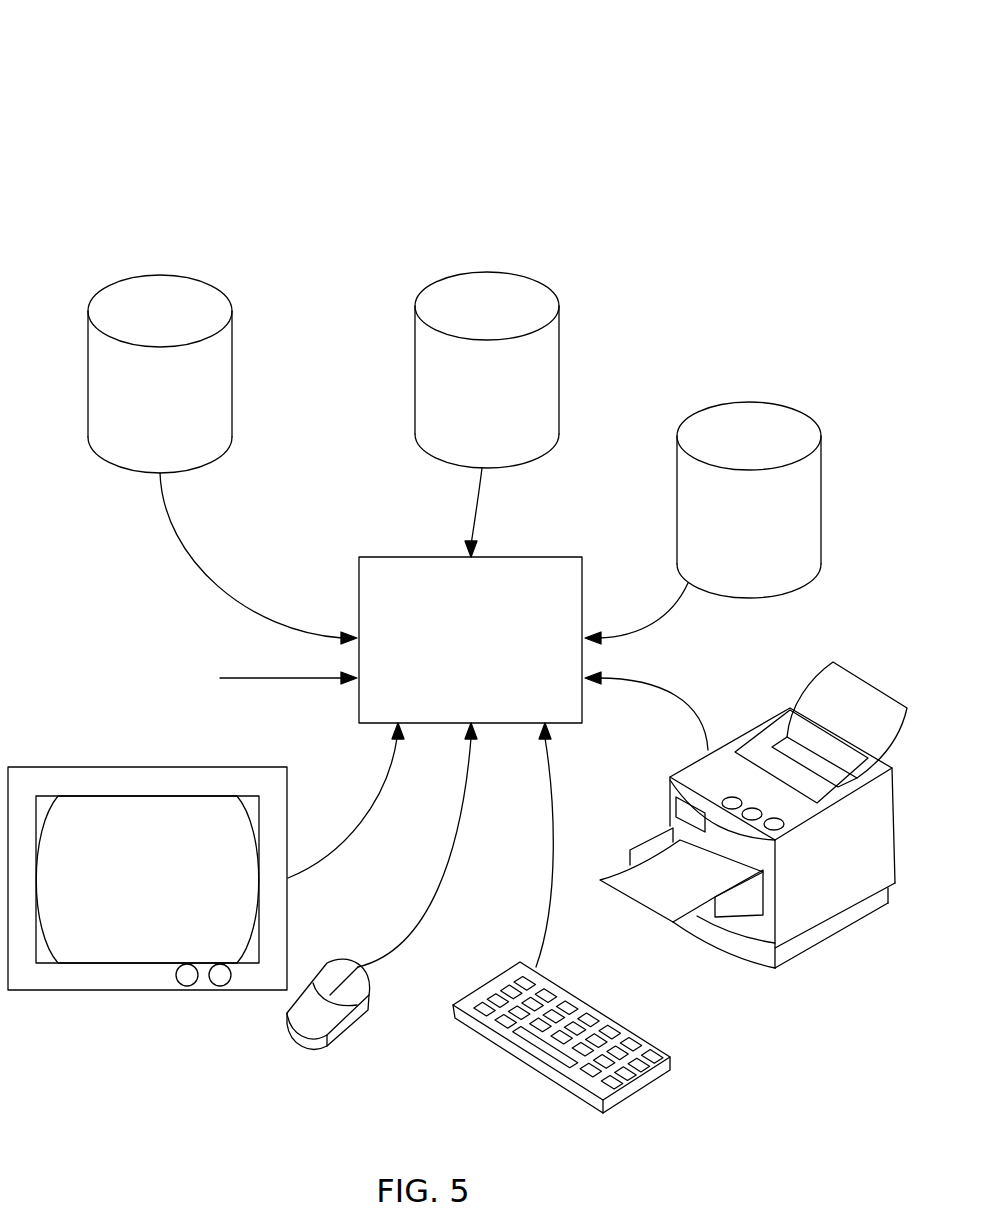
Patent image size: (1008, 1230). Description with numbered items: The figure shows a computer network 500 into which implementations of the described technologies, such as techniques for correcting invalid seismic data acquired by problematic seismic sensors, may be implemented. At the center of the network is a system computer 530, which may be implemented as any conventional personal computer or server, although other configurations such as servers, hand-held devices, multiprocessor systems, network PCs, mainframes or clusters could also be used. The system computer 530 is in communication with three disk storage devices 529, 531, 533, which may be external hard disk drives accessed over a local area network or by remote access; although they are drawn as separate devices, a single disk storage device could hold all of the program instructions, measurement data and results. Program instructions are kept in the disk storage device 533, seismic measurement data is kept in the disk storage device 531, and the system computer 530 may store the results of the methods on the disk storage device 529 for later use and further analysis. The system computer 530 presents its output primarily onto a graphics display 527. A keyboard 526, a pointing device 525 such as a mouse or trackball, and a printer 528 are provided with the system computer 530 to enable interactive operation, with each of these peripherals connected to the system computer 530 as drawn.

The computer network 500 is at (165, 86).
The pointing device 525 is at (300, 1047).
The keyboard 526 is at (630, 1095).
The graphics display 527 is at (147, 990).
The printer 528 is at (800, 957).
The disk storage device 529 is at (748, 400).
The system computer 530 is at (510, 557).
The disk storage device 531 is at (535, 280).
The disk storage device 533 is at (203, 282).